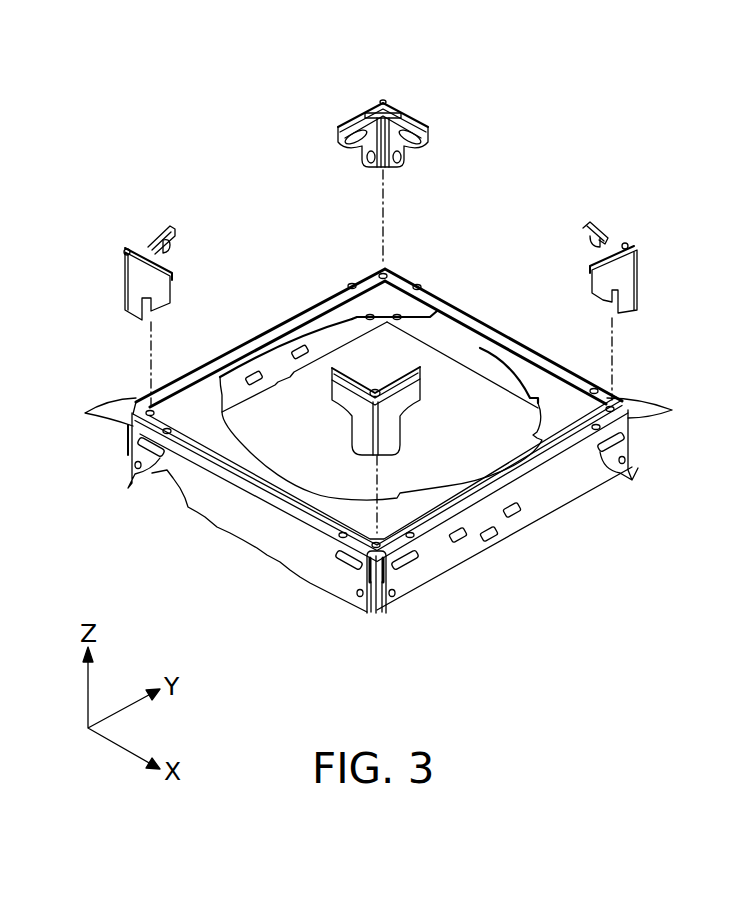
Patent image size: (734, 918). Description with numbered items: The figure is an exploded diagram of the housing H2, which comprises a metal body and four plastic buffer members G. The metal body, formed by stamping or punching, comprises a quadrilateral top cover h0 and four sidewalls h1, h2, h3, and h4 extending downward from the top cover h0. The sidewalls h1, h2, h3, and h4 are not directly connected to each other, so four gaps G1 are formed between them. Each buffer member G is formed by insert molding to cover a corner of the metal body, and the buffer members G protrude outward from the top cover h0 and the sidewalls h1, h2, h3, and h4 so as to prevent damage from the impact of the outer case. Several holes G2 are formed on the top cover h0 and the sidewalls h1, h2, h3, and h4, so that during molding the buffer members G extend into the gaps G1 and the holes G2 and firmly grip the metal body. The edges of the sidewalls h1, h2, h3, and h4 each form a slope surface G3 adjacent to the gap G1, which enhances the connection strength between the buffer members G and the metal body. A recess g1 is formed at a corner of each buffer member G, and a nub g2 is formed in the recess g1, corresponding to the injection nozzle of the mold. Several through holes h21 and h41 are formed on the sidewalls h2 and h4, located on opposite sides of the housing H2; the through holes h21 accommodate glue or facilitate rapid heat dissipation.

The buffer member G is at (393, 117).
The recess g1 is at (128, 250).
The nub g2 is at (125, 253).
The gap G1 is at (388, 321).
The hole G2 is at (634, 474).
The slope surface G3 is at (345, 555).
The top cover h0 is at (203, 405).
The sidewall h1 is at (460, 345).
The sidewall h2 is at (577, 480).
The through hole h21 is at (513, 518).
The sidewall h3 is at (240, 518).
The sidewall h4 is at (322, 334).
The through hole h41 is at (305, 350).
The housing H2 is at (370, 279).